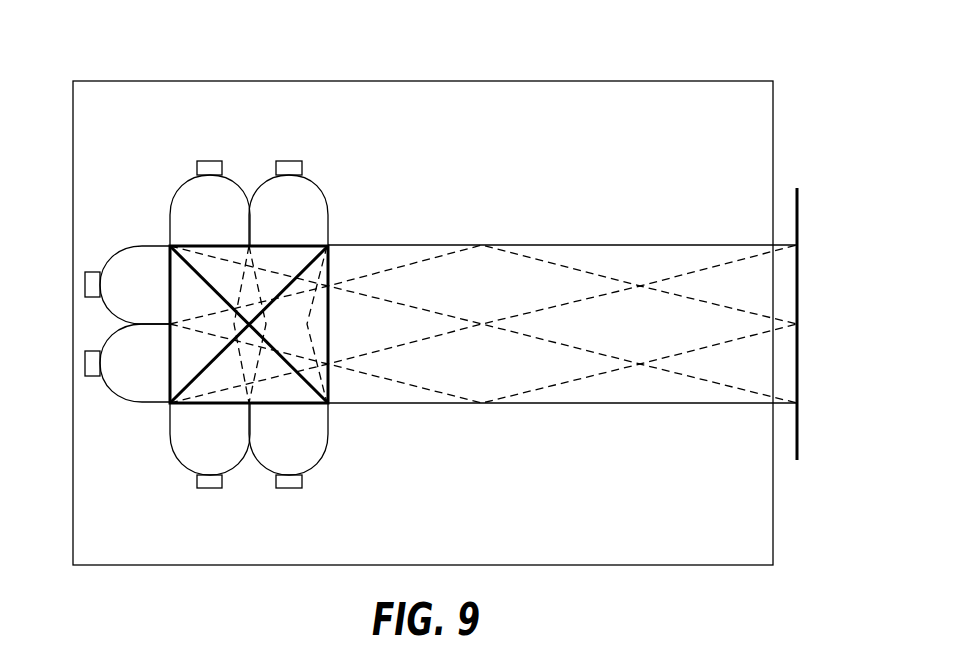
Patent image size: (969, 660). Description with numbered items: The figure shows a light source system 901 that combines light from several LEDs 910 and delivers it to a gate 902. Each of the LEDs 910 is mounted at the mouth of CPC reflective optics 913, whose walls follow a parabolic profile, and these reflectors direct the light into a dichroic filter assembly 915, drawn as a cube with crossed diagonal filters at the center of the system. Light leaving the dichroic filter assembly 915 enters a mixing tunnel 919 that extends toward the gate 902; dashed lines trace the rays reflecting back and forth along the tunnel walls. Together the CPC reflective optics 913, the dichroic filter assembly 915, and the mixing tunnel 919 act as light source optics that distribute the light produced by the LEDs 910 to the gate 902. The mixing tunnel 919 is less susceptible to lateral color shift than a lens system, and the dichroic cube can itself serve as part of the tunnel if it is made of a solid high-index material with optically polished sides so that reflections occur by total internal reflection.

The light source system 901 is at (423, 80).
The gate 902 is at (799, 214).
The LEDs 910 is at (85, 284).
The CPC reflective optics 913 is at (130, 246).
The dichroic filter assembly 915 is at (329, 244).
The mixing tunnel 919 is at (565, 245).